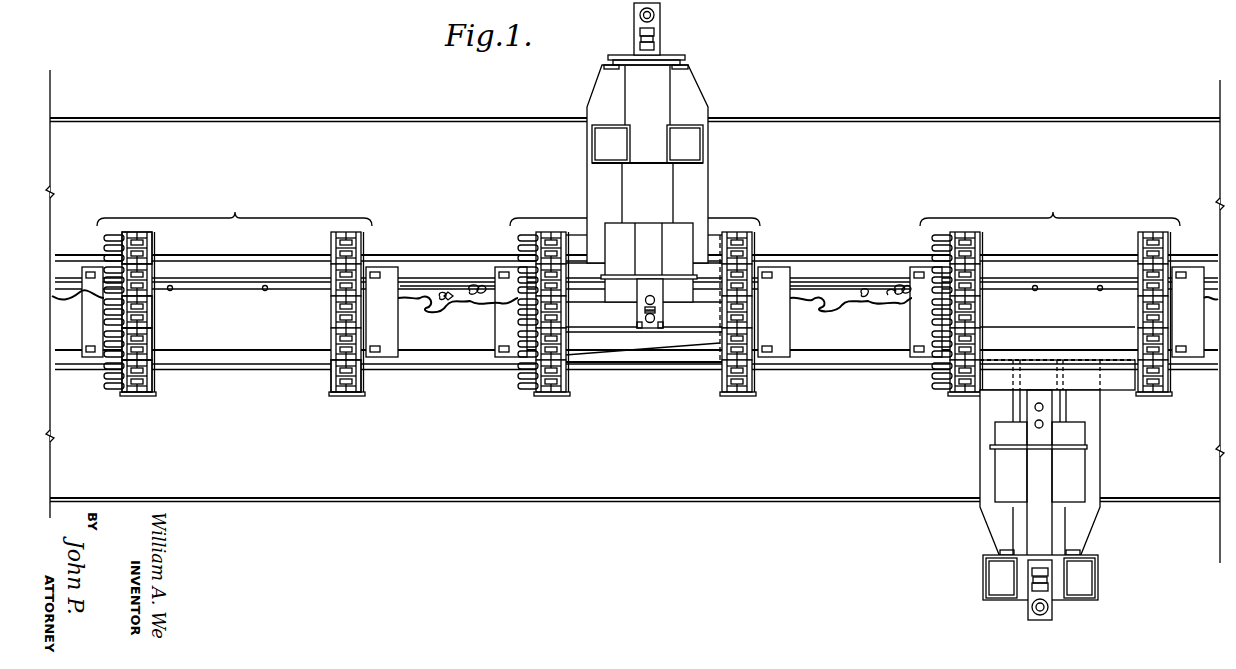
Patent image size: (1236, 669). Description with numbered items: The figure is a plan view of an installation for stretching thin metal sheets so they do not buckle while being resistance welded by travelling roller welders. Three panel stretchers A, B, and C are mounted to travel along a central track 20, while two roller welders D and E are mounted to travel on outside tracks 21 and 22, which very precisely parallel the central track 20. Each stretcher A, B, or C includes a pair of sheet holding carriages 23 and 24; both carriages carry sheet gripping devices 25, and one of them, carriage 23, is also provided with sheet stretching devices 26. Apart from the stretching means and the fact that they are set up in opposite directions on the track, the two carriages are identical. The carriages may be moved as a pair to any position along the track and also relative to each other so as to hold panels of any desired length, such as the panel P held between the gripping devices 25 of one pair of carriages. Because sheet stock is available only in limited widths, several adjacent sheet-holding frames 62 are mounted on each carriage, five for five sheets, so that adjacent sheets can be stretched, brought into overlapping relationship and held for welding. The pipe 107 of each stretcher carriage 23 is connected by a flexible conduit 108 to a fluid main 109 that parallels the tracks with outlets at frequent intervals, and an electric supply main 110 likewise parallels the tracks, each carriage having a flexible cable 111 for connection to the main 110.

The central track 20 is at (236, 277).
The outside track 21 is at (436, 252).
The outside track 22 is at (418, 378).
The sheet holding carriage 23 is at (130, 397).
The sheet holding carriage 24 is at (357, 399).
The sheet gripping device 25 is at (145, 397).
The sheet stretching device 26 is at (110, 393).
The sheet frame 62 is at (154, 260).
The pipe 107 is at (88, 290).
The flexible conduit 108 is at (478, 290).
The fluid main 109 is at (462, 288).
The electric supply main 110 is at (409, 288).
The flexible cable 111 is at (428, 304).
The panel stretcher A is at (234, 207).
The panel stretcher B is at (635, 207).
The panel stretcher C is at (1050, 207).
The roller welder D is at (713, 170).
The roller welder E is at (1104, 462).
The panel P is at (628, 345).